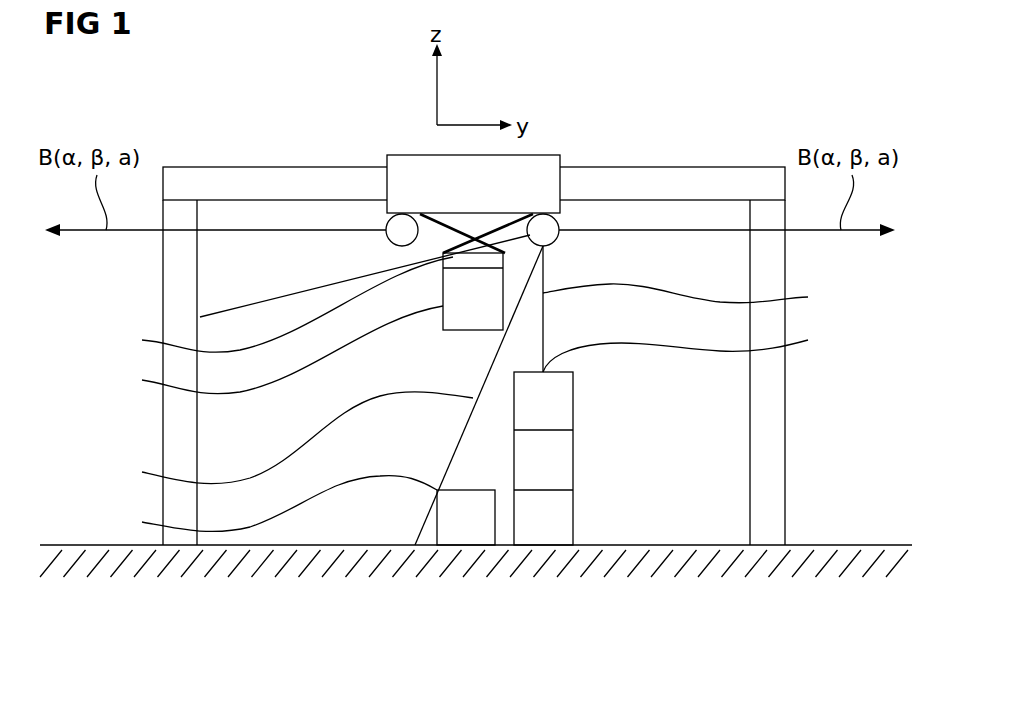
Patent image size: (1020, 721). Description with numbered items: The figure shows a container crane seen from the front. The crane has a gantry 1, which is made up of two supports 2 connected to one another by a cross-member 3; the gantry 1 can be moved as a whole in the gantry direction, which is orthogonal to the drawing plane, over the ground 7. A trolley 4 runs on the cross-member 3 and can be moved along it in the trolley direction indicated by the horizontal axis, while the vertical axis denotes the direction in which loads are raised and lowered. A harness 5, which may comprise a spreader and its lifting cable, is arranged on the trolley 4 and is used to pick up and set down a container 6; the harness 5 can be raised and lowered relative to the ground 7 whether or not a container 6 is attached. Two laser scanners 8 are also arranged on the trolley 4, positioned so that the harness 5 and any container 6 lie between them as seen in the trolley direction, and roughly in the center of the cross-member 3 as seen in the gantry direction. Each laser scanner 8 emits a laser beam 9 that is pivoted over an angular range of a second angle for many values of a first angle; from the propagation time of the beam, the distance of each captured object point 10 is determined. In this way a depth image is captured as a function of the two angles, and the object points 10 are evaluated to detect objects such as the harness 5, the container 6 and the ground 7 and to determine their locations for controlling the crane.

The gantry 1 is at (752, 128).
The supports 2 is at (163, 412).
The cross-member 3 is at (667, 167).
The trolley 4 is at (411, 155).
The harness 5 is at (286, 305).
The container 6 is at (311, 323).
The ground 7 is at (672, 558).
The laser scanner 8 is at (388, 223).
The laser beam 9 is at (288, 294).
The object point 10 is at (538, 262).